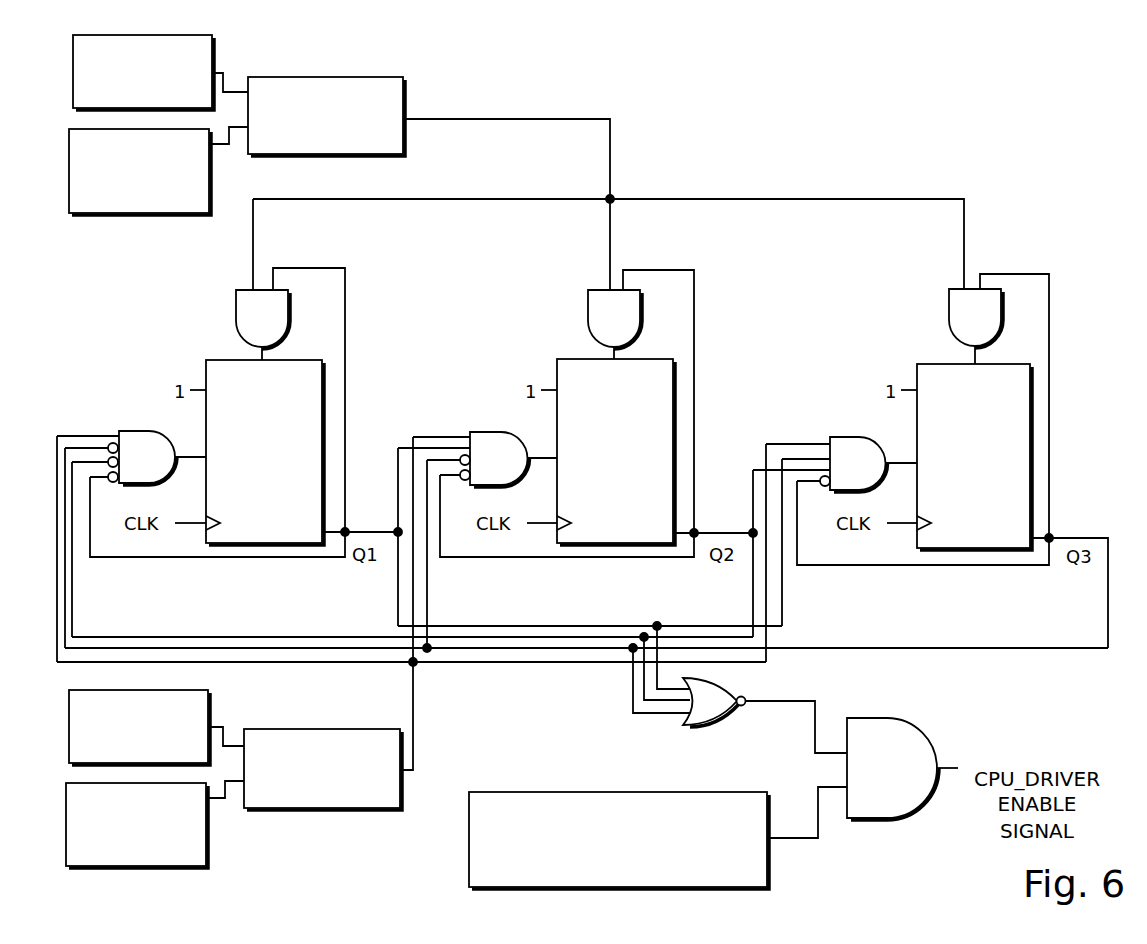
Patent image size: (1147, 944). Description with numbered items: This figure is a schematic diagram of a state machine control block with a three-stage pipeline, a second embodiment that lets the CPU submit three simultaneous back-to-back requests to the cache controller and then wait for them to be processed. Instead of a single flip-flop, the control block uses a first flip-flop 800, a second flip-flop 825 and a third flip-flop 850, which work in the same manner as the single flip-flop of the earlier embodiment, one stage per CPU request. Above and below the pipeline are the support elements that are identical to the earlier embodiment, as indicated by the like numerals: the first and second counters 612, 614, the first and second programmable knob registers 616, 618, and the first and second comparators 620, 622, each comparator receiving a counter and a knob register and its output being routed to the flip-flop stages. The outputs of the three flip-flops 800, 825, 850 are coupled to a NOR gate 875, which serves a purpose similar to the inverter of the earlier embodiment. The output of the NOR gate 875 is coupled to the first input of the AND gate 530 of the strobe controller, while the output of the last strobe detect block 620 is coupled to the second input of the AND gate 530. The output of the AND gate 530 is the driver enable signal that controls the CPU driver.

The second counter 614 is at (163, 103).
The second programmable knob register 618 is at (162, 205).
The second comparator 622 is at (357, 148).
The first counter 612 is at (161, 758).
The first programmable knob register 616 is at (160, 860).
The first comparator / last strobe detect block 620 is at (354, 802).
The first flip-flop 800 is at (243, 461).
The second flip-flop 825 is at (594, 459).
The third flip-flop 850 is at (954, 464).
The NOR gate 875 is at (705, 726).
The AND gate 530 is at (866, 780).